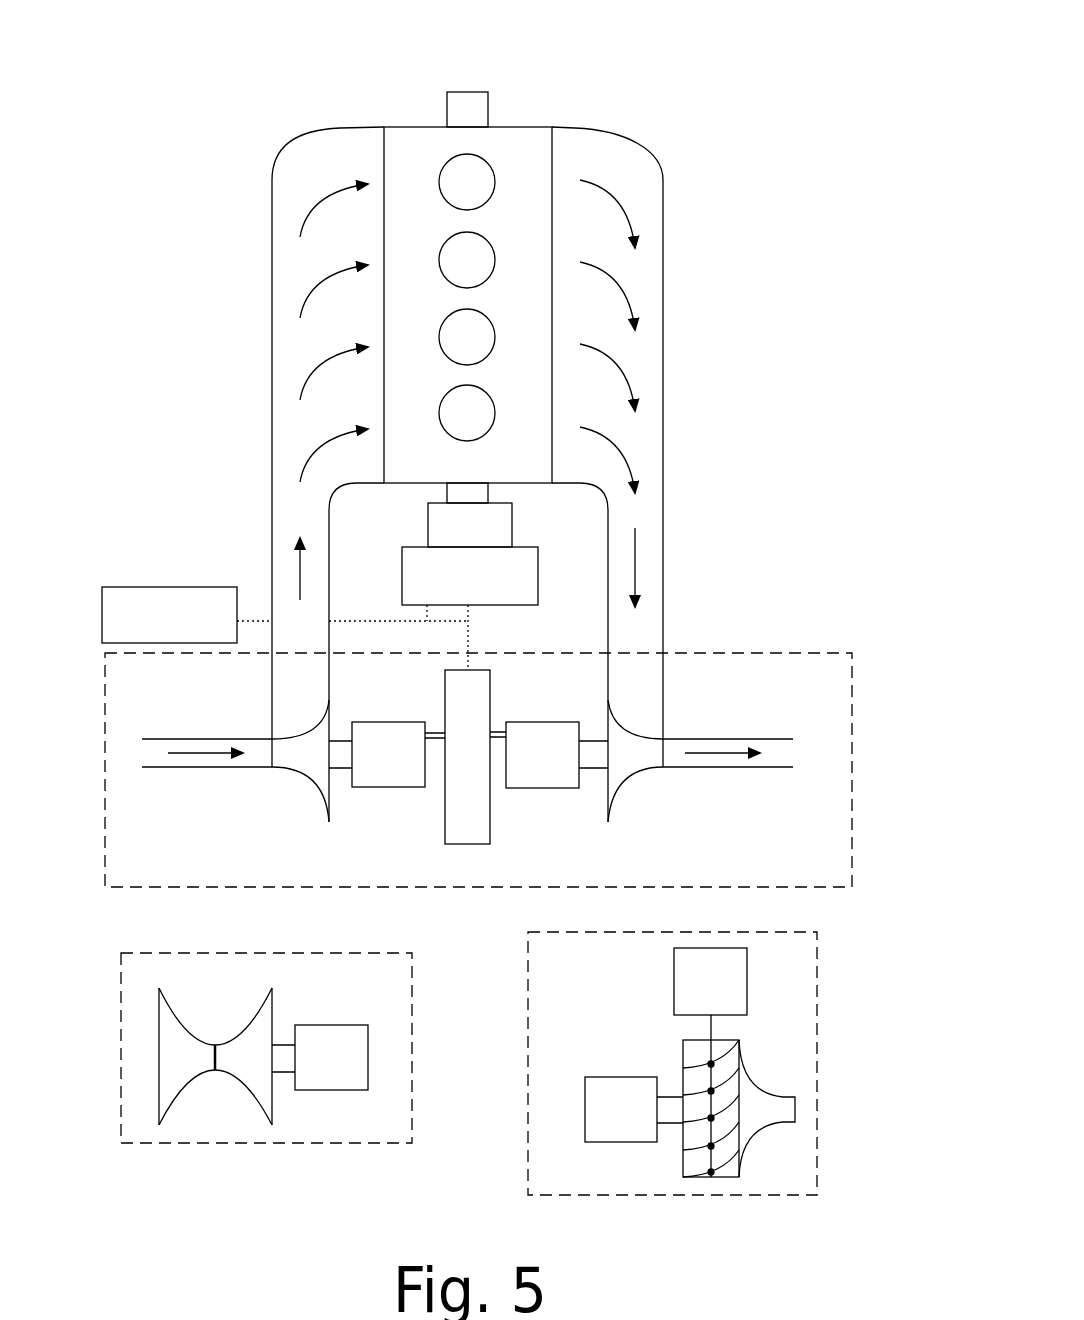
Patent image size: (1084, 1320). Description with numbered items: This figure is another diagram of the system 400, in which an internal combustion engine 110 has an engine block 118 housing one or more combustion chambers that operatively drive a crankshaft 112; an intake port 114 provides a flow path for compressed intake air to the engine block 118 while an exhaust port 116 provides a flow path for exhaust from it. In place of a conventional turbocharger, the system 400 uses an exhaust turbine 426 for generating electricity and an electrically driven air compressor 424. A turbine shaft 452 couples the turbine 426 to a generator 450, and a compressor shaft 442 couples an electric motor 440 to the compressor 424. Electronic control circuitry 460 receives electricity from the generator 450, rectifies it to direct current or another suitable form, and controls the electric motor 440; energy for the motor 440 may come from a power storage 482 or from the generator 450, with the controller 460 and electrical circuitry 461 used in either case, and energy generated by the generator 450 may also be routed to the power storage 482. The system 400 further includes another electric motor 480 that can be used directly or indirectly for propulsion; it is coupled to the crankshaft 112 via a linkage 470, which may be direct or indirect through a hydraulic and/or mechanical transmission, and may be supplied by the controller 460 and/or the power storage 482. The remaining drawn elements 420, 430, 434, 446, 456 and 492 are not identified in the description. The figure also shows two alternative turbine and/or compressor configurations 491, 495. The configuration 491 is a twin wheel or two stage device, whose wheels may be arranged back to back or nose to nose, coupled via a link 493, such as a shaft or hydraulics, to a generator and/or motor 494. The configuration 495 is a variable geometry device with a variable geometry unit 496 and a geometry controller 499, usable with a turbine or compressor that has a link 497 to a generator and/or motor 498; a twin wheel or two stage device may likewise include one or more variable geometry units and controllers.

The system 400 is at (656, 38).
The internal combustion engine 110 is at (424, 125).
The crankshaft 112 is at (468, 92).
The intake port 114 is at (295, 145).
The exhaust port 116 is at (657, 160).
The engine block 118 is at (449, 477).
The linkage 470 is at (449, 537).
The electric motor 480 is at (449, 590).
The power storage 482 is at (151, 627).
The electrical circuitry 461 is at (470, 640).
The turbocharger system 420 is at (730, 650).
The air intake 430 is at (228, 738).
The air compressor 424 is at (331, 702).
The electric motor 440 is at (414, 790).
The compressor shaft 442 is at (344, 770).
The clutch shaft 446 is at (432, 732).
The electronic control circuitry 460 is at (453, 845).
The turbine clutch shaft 456 is at (499, 732).
The generator 450 is at (530, 790).
The turbine shaft 452 is at (585, 770).
The exhaust turbine 426 is at (607, 702).
The exhaust outlet 434 is at (733, 738).
The twin wheel configuration 491 is at (217, 985).
The compressor wheel 492 is at (213, 1043).
The link 493 is at (281, 1040).
The generator and/or motor 494 is at (313, 1070).
The variable geometry configuration 495 is at (562, 972).
The variable geometry unit 496 is at (683, 1045).
The link 497 is at (673, 1095).
The generator and/or motor 498 is at (602, 1122).
The geometry controller 499 is at (692, 994).